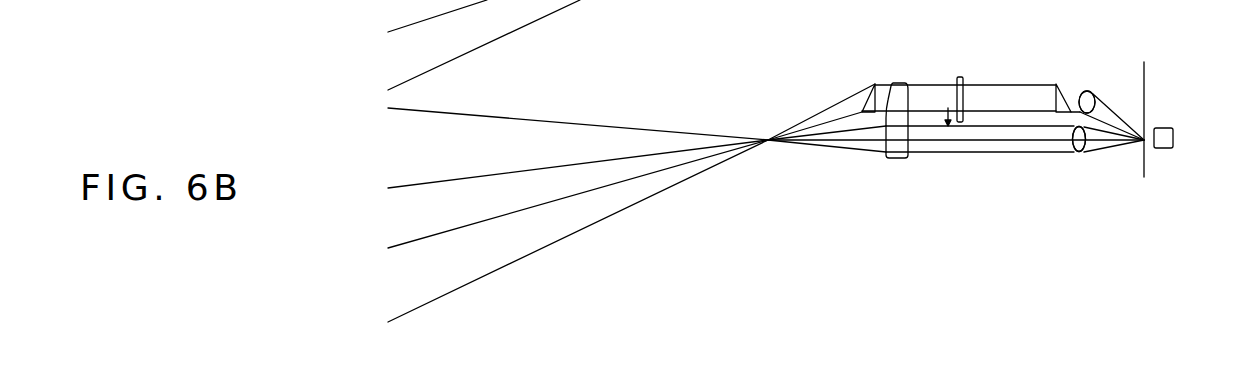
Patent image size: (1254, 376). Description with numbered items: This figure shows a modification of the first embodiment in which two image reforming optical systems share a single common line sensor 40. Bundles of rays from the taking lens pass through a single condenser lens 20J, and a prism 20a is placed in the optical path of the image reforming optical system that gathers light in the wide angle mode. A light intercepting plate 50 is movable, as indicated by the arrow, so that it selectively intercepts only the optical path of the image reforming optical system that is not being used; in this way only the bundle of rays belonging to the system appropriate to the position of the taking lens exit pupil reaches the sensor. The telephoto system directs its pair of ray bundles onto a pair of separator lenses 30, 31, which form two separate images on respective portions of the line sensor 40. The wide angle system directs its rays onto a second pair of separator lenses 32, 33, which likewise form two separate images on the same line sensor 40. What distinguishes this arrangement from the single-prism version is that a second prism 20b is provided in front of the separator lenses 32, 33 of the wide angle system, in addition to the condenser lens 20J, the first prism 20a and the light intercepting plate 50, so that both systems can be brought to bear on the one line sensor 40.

The prism 20a is at (875, 86).
The second prism 20b is at (1057, 83).
The condenser lens 20J is at (902, 158).
The light intercepting plate 50 is at (965, 79).
The separator lens 30 is at (1080, 153).
The separator lens 31 is at (1079, 139).
The separator lens 32 is at (1092, 92).
The separator lens 33 is at (1087, 102).
The line sensor 40 is at (1173, 138).